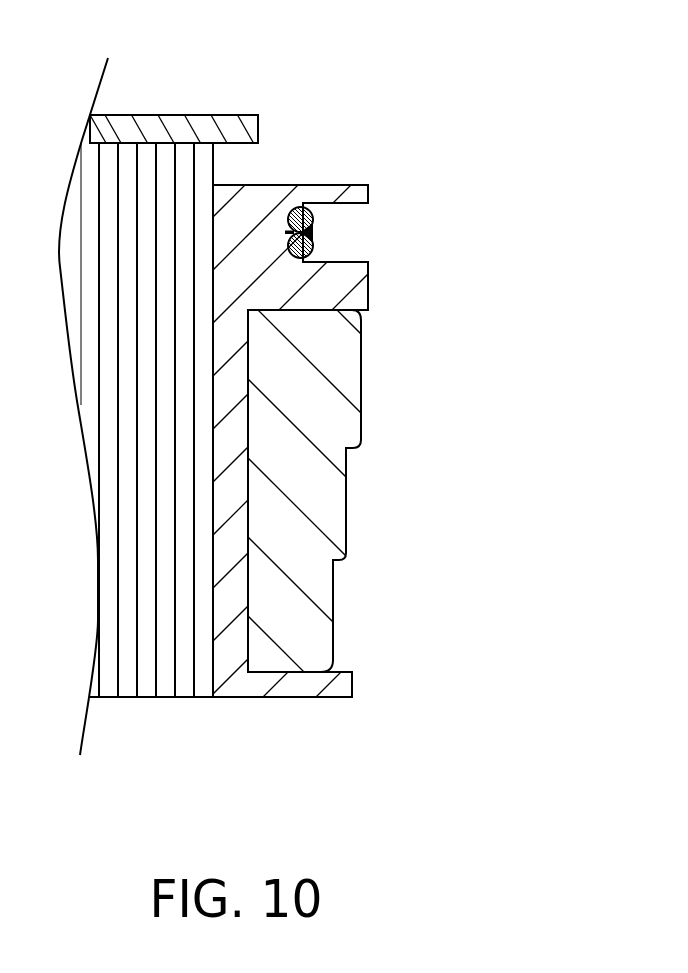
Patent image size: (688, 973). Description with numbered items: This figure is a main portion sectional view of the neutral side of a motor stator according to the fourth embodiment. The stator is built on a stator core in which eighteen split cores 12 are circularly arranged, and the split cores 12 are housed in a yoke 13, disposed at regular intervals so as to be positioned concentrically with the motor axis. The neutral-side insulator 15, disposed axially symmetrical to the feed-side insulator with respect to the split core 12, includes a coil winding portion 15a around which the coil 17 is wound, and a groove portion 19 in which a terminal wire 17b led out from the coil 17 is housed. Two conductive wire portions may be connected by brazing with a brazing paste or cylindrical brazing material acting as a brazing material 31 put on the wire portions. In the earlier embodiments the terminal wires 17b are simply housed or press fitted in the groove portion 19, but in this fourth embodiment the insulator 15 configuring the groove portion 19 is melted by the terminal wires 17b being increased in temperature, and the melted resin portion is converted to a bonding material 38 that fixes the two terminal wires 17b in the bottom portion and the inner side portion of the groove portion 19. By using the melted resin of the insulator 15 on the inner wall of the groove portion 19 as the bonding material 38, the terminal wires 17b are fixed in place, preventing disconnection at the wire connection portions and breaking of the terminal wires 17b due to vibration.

The split core 12 is at (156, 684).
The yoke 13 is at (157, 127).
The neutral-side insulator 15 is at (262, 185).
The coil winding portion 15a is at (320, 190).
The coil 17 is at (346, 522).
The terminal wire 17b is at (313, 248).
The groove portion 19 is at (352, 232).
The brazing material 31 is at (313, 223).
The bonding material 38 is at (294, 266).